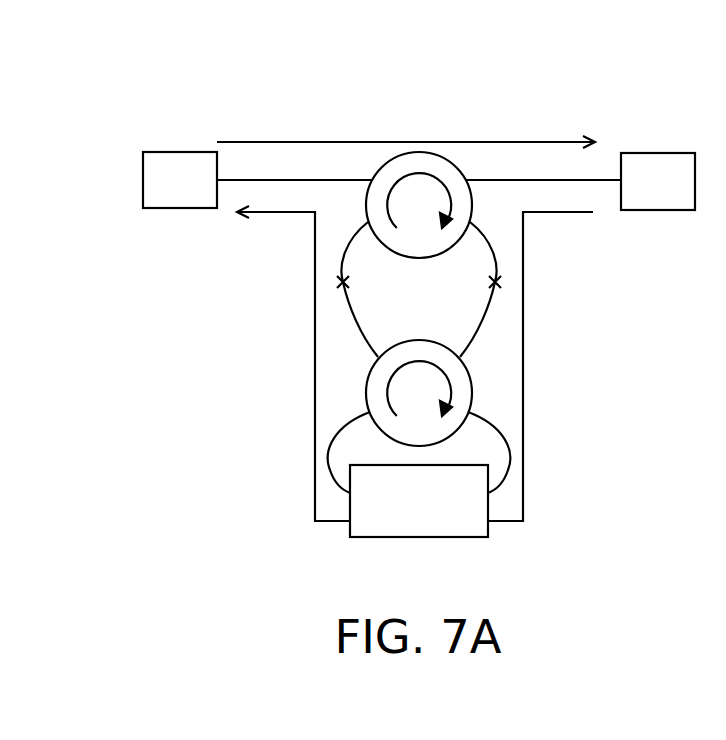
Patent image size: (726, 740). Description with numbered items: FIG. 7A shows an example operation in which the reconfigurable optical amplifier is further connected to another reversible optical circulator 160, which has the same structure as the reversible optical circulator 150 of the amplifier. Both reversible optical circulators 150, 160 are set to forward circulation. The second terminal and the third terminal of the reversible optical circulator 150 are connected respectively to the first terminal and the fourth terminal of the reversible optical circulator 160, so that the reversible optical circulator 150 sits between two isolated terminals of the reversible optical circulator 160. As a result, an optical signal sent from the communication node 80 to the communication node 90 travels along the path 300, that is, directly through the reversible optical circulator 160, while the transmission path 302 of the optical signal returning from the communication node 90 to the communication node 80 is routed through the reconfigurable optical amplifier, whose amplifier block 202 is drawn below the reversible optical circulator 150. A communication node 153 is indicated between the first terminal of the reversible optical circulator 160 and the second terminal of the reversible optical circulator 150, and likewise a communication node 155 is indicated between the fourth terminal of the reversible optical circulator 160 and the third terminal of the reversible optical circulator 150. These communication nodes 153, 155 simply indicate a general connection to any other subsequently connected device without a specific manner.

The path 300 is at (290, 142).
The transmission path 302 is at (315, 377).
The communication node 80 is at (164, 195).
The communication node 90 is at (643, 198).
The reversible optical circulator 160 is at (419, 152).
The reversible optical circulator 150 is at (472, 378).
The communication node 153 is at (336, 282).
The communication node 155 is at (503, 282).
The optical amplifier 202 is at (488, 510).